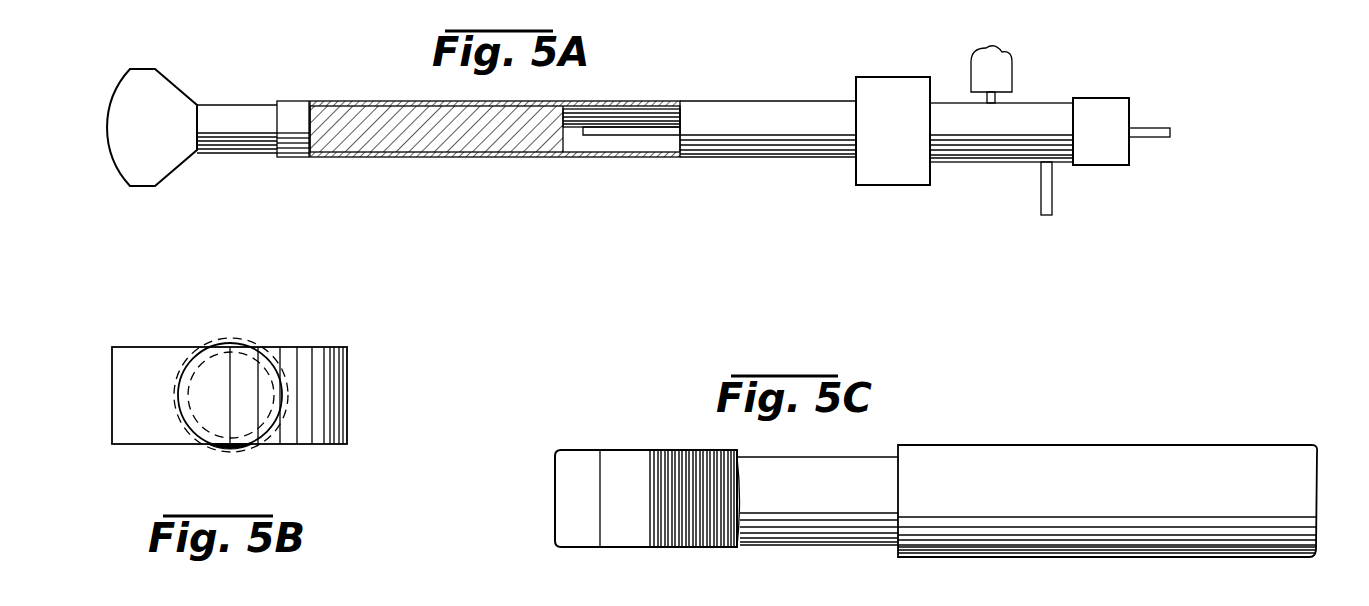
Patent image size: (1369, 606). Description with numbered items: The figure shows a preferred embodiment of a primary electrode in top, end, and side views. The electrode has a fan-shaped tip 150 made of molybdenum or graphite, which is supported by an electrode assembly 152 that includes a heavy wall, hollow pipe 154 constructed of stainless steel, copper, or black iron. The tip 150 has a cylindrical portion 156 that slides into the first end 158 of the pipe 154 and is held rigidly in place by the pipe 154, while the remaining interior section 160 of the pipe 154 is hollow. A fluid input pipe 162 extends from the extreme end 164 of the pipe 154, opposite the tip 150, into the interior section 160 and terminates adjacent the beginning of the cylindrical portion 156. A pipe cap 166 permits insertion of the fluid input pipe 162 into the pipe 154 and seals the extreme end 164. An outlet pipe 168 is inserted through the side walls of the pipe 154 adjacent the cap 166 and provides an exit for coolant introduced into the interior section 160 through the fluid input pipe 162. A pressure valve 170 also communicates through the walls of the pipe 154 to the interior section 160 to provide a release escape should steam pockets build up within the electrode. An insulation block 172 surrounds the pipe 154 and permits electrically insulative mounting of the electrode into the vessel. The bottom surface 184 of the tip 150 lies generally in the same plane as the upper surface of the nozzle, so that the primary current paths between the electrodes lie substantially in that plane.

In FIG. 5A, the fan-shaped tip 150 is at (170, 82).
In FIG. 5B, the fan-shaped tip 150 is at (348, 382).
In FIG. 5C, the fan-shaped tip 150 is at (622, 530).
In FIG. 5A, the electrode assembly 152 is at (738, 97).
In FIG. 5A, the hollow pipe 154 is at (605, 157).
In FIG. 5B, the hollow pipe 154 is at (232, 341).
In FIG. 5C, the hollow pipe 154 is at (1180, 547).
In FIG. 5A, the cylindrical portion 156 is at (404, 137).
In FIG. 5C, the cylindrical portion 156 is at (1315, 527).
In FIG. 5A, the first end 158 is at (272, 153).
In FIG. 5B, the first end 158 is at (272, 349).
In FIG. 5C, the first end 158 is at (889, 541).
In FIG. 5A, the interior section 160 is at (627, 118).
In FIG. 5A, the fluid input pipe 162 is at (1158, 139).
In FIG. 5A, the extreme end 164 is at (1043, 105).
In FIG. 5A, the pipe cap 166 is at (1120, 118).
In FIG. 5A, the outlet pipe 168 is at (1053, 203).
In FIG. 5A, the pressure valve 170 is at (1004, 70).
In FIG. 5A, the insulation block 172 is at (890, 178).
In FIG. 5B, the bottom surface 184 is at (286, 444).
In FIG. 5C, the bottom surface 184 is at (563, 548).